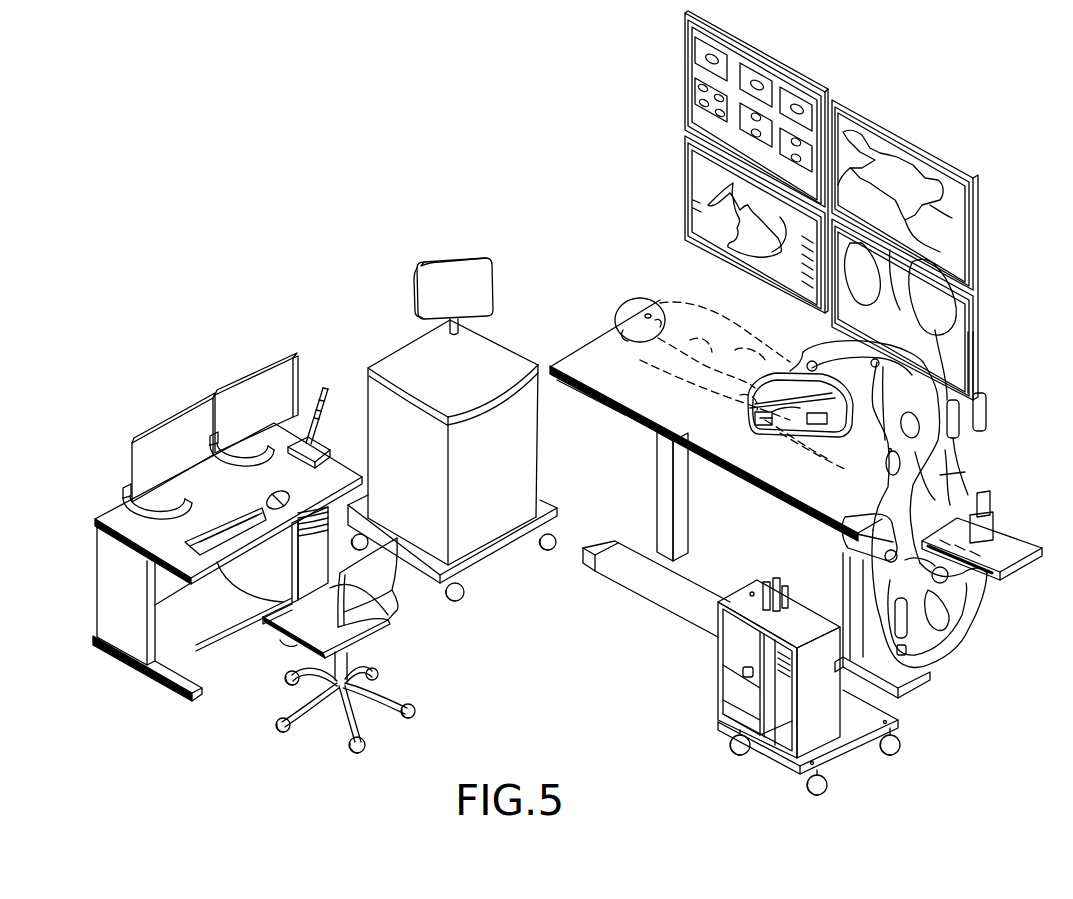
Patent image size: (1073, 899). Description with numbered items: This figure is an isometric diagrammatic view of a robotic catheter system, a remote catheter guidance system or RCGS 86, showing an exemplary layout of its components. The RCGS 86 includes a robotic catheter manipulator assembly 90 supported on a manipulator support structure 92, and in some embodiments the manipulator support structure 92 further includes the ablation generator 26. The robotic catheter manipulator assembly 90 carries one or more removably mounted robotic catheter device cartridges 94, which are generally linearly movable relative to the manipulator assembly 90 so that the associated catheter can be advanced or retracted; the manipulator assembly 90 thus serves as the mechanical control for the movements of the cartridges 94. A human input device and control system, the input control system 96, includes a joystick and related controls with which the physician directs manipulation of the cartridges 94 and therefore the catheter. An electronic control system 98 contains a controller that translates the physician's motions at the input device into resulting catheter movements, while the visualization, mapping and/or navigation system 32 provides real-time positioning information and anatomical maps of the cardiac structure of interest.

The ablation generator 26 is at (1018, 528).
The visualization, mapping and/or navigation system 32 is at (478, 262).
The remote catheter guidance system (RCGS) 86 is at (450, 157).
The robotic catheter manipulator assembly 90 is at (797, 380).
The manipulator support structure 92 is at (985, 603).
The robotic catheter device cartridge 94 is at (817, 423).
The input control system 96 is at (186, 374).
The electronic control system 98 is at (700, 736).